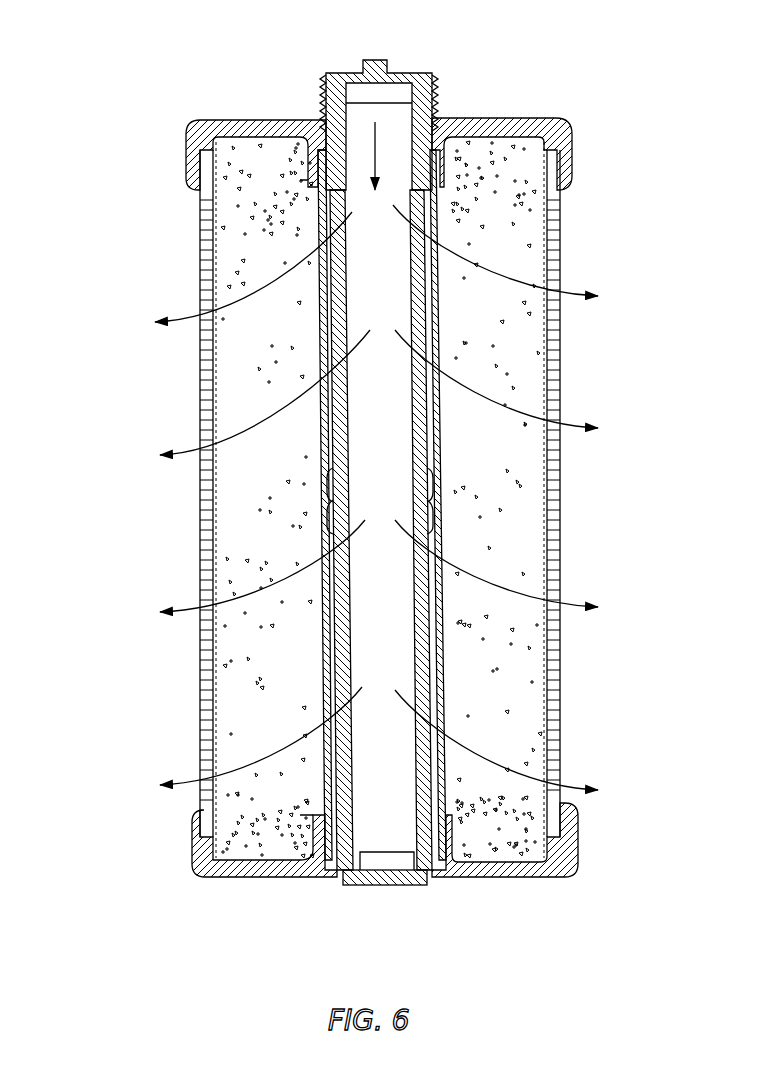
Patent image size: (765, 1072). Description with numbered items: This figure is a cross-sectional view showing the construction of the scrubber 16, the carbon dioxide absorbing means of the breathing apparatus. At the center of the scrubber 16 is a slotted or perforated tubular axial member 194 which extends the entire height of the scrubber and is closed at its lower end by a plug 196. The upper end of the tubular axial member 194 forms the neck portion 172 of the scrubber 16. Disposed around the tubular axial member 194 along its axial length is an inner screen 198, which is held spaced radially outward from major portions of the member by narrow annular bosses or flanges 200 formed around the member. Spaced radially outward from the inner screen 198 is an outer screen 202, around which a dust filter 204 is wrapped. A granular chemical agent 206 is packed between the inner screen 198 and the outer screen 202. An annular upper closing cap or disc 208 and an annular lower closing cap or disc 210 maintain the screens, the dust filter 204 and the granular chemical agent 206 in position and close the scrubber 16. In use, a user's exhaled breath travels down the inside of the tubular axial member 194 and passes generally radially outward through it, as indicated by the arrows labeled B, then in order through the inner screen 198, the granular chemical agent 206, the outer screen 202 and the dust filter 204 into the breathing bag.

The scrubber 16 is at (375, 483).
The neck portion 172 is at (320, 100).
The tubular axial member 194 is at (440, 218).
The plug 196 is at (395, 885).
The inner screen 198 is at (445, 452).
The annular bosses or flanges 200 is at (307, 180).
The outer screen 202 is at (202, 672).
The dust filter 204 is at (557, 695).
The granular chemical agent 206 is at (500, 722).
The upper closing cap or disc 208 is at (493, 118).
The lower closing cap or disc 210 is at (534, 878).